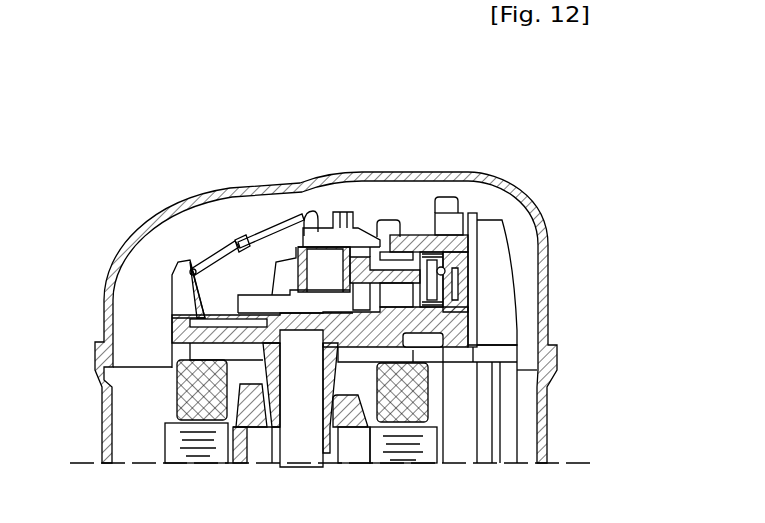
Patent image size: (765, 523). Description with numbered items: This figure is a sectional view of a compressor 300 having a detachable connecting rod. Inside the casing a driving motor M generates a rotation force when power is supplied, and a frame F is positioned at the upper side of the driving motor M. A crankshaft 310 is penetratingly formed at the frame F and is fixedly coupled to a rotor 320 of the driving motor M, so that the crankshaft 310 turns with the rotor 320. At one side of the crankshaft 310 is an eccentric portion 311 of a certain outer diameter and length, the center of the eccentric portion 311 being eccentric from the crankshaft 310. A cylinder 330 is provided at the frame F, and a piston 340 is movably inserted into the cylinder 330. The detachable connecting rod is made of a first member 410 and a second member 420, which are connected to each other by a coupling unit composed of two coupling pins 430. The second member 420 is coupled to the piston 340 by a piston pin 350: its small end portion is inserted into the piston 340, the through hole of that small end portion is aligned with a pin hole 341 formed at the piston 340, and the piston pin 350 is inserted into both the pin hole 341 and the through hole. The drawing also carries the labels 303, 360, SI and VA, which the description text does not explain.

The compressor 300 is at (537, 181).
The connecting arm 303 is at (275, 225).
The crankshaft 310 is at (333, 464).
The eccentric portion 311 is at (317, 265).
The rotor 320 is at (260, 464).
The cylinder 330 is at (409, 238).
The piston 340 is at (455, 246).
The pin hole 341 is at (450, 273).
The piston pin 350 is at (430, 292).
The guide plate 360 is at (519, 232).
The first member 410 is at (347, 232).
The second member 420 is at (414, 262).
The coupling pins 430 is at (380, 228).
The space SI is at (328, 222).
The vertical axis plate VA is at (473, 213).
The frame F is at (158, 310).
The driving motor M is at (158, 445).